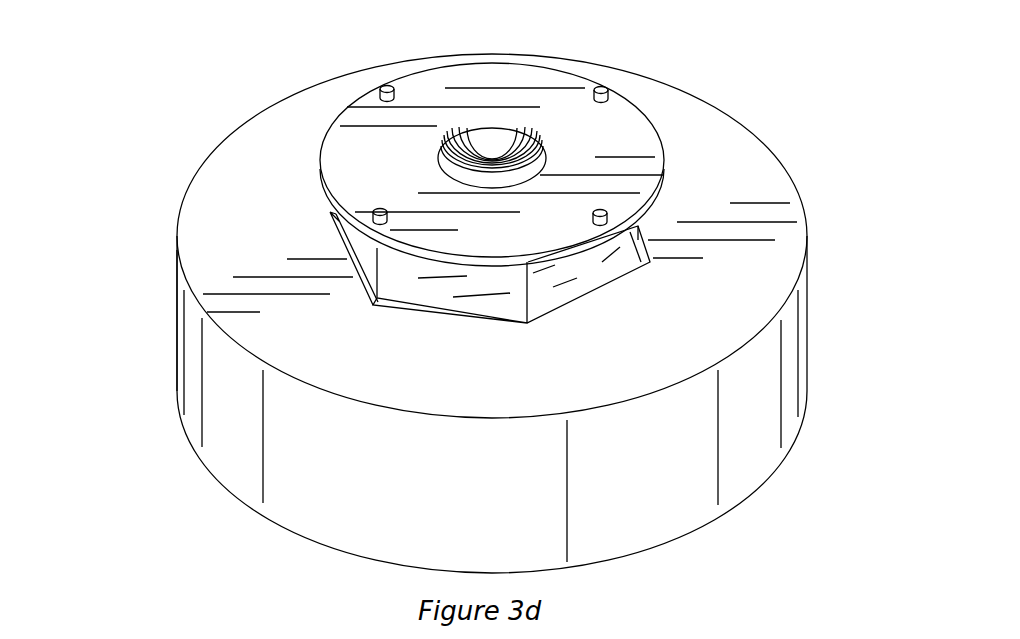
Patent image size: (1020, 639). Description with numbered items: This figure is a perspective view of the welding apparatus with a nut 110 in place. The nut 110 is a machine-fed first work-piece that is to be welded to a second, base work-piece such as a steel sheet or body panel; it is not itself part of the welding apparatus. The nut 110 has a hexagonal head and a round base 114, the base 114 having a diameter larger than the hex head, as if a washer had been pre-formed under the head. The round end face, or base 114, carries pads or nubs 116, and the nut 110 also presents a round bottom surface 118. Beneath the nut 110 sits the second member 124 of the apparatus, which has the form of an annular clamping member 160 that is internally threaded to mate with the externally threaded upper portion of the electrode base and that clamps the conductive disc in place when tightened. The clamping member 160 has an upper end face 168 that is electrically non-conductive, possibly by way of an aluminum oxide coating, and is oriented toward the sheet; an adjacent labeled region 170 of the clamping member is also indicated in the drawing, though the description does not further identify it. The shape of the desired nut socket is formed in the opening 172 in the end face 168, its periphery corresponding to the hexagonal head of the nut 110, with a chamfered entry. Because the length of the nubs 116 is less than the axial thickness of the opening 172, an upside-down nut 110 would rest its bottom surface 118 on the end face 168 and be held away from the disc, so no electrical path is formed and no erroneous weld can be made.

The nut 110 is at (597, 270).
The base 114 is at (381, 140).
The nubs 116 is at (381, 87).
The round bottom surface 118 is at (315, 152).
The second member 124 is at (197, 378).
The clamping member 160 is at (207, 438).
The upper end face 168 is at (212, 193).
The top surface 170 is at (237, 162).
The opening 172 is at (350, 252).